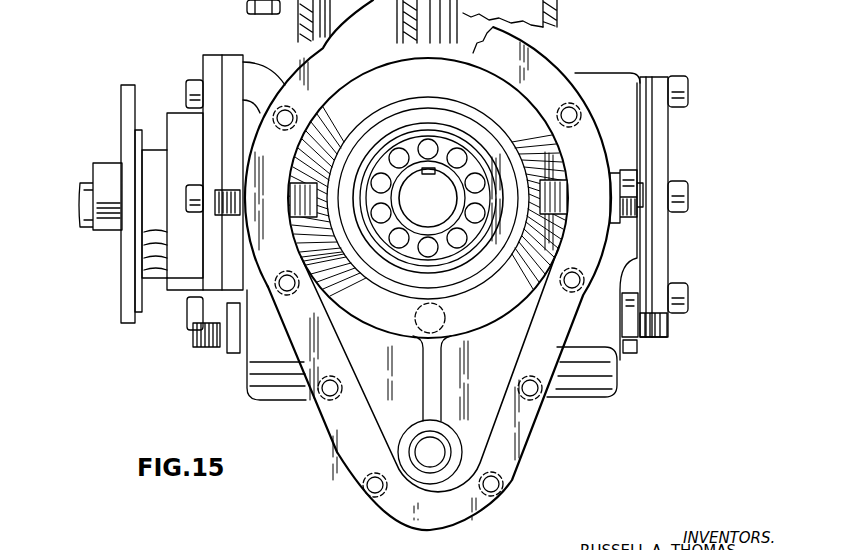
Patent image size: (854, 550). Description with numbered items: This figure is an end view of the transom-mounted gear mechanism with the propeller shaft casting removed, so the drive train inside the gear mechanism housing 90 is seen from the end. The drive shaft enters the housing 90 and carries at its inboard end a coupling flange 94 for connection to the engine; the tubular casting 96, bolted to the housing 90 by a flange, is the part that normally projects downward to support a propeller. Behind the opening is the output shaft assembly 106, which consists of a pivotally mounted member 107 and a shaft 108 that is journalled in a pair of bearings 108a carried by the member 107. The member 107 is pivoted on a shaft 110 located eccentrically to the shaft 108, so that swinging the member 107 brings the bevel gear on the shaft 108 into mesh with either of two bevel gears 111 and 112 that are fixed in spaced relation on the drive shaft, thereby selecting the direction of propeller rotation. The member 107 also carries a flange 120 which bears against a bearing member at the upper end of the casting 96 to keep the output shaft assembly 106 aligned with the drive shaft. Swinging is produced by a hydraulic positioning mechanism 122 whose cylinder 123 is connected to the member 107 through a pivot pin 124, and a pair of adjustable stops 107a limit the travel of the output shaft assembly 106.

The gear mechanism housing 90 is at (236, 56).
The coupling flange 94 is at (121, 95).
The tubular casting 96 is at (558, 8).
The output shaft assembly 106 is at (526, 100).
The pivotally mounted member 107 is at (300, 40).
The adjustable stops 107a is at (197, 183).
The shaft 108 is at (435, 212).
The bearings 108a is at (395, 157).
The shaft 110 is at (438, 453).
The bevel gear 111 is at (346, 102).
The bevel gear 112 is at (540, 108).
The flange 120 is at (428, 178).
The hydraulic positioning mechanism 122 is at (338, 318).
The cylinder 123 is at (330, 305).
The pivot pin 124 is at (446, 290).